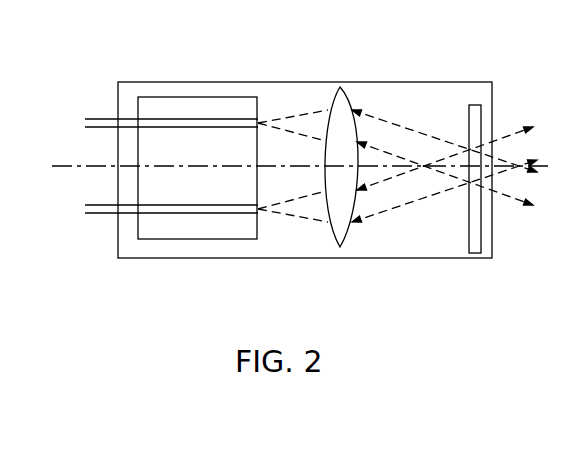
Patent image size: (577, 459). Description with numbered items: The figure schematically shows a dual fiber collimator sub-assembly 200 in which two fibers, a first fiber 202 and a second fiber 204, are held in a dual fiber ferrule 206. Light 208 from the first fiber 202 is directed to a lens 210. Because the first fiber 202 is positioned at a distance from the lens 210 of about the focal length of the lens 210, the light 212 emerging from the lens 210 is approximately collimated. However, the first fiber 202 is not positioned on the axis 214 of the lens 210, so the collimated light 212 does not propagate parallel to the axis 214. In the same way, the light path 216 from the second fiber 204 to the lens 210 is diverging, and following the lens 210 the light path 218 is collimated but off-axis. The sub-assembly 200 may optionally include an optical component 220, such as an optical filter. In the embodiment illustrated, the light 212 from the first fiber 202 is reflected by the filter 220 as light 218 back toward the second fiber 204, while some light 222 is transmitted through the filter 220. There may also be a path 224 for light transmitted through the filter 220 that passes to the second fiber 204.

The dual fiber collimator sub-assembly 200 is at (302, 260).
The first fiber 202 is at (102, 117).
The second fiber 204 is at (100, 217).
The dual fiber ferrule 206 is at (155, 97).
The light from the first fiber 208 is at (292, 112).
The lens 210 is at (341, 86).
The collimated light 212 is at (391, 122).
The axis 214 is at (192, 168).
The light path from the second fiber 216 is at (293, 219).
The collimated light path 218 is at (390, 213).
The optical component 220 is at (478, 255).
The transmitted light 222 is at (517, 203).
The path for transmitted light 224 is at (515, 131).